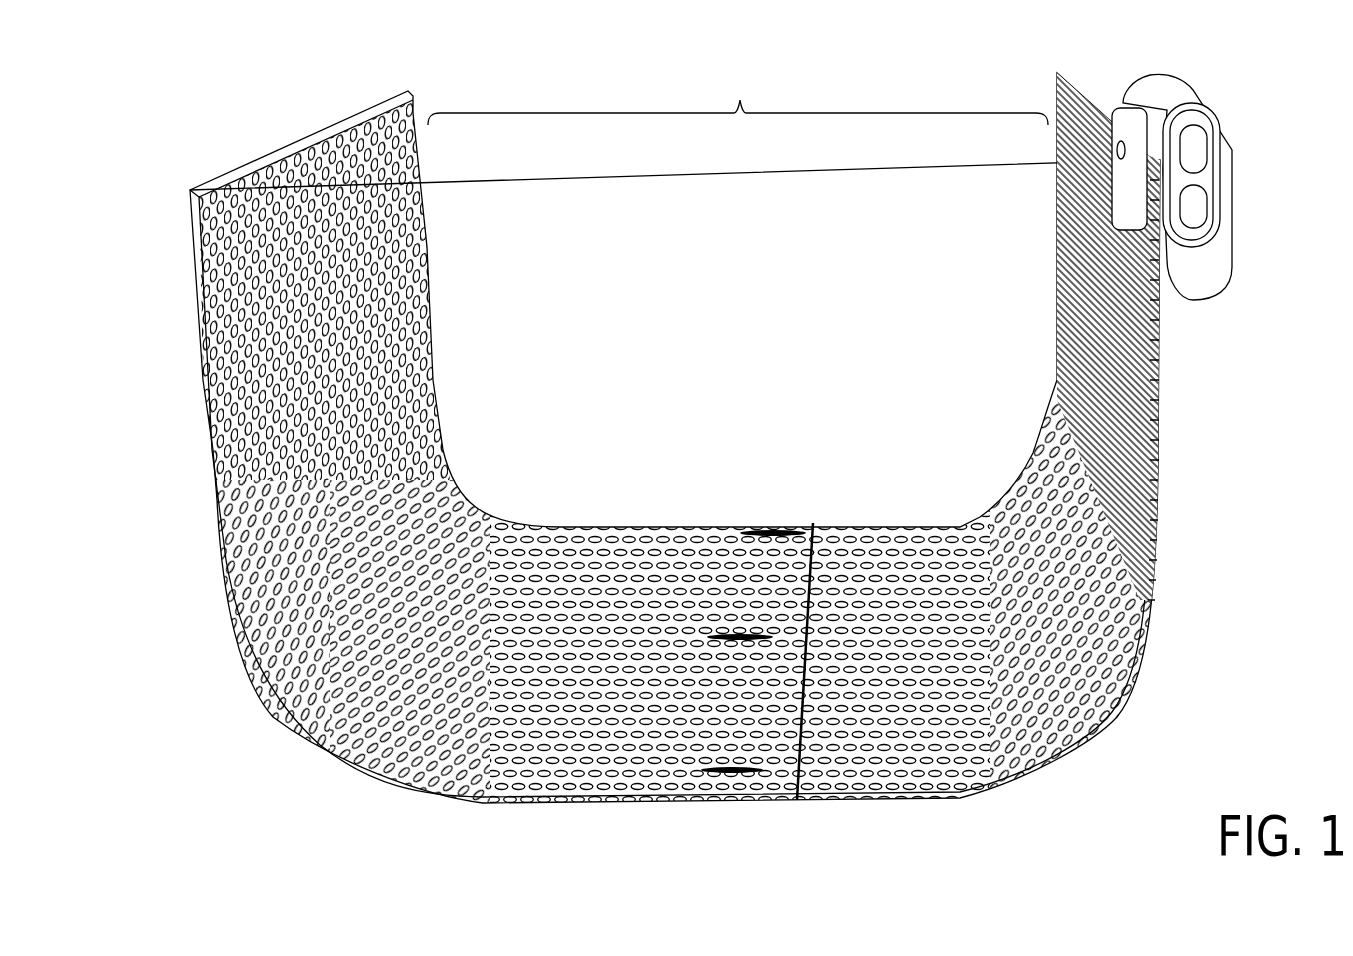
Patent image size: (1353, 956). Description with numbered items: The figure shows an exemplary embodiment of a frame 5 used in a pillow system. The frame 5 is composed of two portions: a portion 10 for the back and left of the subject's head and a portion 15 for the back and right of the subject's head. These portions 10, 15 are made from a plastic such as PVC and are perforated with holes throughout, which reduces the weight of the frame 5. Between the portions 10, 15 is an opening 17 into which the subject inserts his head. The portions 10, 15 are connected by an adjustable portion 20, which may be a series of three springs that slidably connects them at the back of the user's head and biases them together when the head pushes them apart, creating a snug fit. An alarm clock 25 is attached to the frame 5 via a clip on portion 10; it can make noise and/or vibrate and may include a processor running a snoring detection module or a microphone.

The frame 5 is at (148, 153).
The portion 10 is at (1170, 447).
The portion 15 is at (213, 450).
The opening 17 is at (738, 95).
The adjustable portion 20 is at (727, 770).
The alarm clock 25 is at (1220, 182).